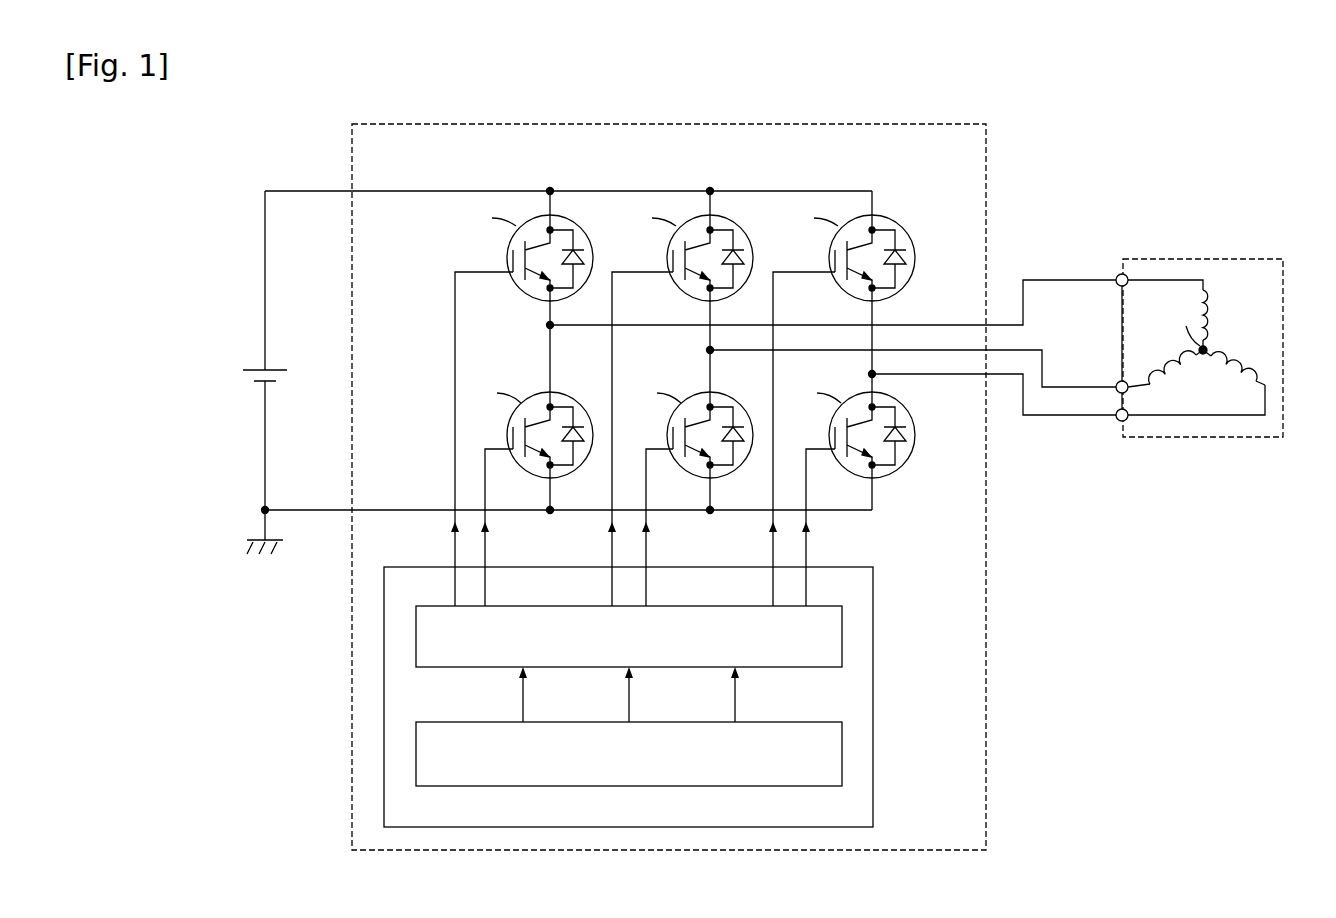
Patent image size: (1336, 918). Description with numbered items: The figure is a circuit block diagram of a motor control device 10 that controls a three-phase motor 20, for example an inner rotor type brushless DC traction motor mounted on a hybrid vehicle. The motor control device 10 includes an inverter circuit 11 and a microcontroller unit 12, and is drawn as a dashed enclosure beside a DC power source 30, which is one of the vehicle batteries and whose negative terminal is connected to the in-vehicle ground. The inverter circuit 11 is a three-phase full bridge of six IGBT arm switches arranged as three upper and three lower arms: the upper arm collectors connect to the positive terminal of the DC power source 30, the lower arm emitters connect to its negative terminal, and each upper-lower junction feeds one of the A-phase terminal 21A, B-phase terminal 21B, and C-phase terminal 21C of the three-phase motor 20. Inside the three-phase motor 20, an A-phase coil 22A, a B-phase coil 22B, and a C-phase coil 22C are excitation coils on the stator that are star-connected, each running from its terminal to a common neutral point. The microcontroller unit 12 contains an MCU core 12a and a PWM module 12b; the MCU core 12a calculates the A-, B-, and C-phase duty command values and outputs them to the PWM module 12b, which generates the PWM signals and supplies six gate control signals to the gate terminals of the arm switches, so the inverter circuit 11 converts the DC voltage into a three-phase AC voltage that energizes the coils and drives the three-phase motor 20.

The motor control device 10 is at (988, 158).
The inverter circuit 11 is at (887, 193).
The microcontroller unit (MCU) 12 is at (660, 697).
The MCU core 12a is at (785, 722).
The PWM module 12b is at (690, 605).
The three-phase motor 20 is at (1170, 360).
The A-phase terminal 21A is at (1116, 274).
The B-phase terminal 21B is at (1116, 382).
The C-phase terminal 21C is at (1116, 421).
The A-phase coil 22A is at (1212, 315).
The B-phase coil 22B is at (1173, 380).
The C-phase coil 22C is at (1236, 382).
The DC power source 30 is at (272, 362).